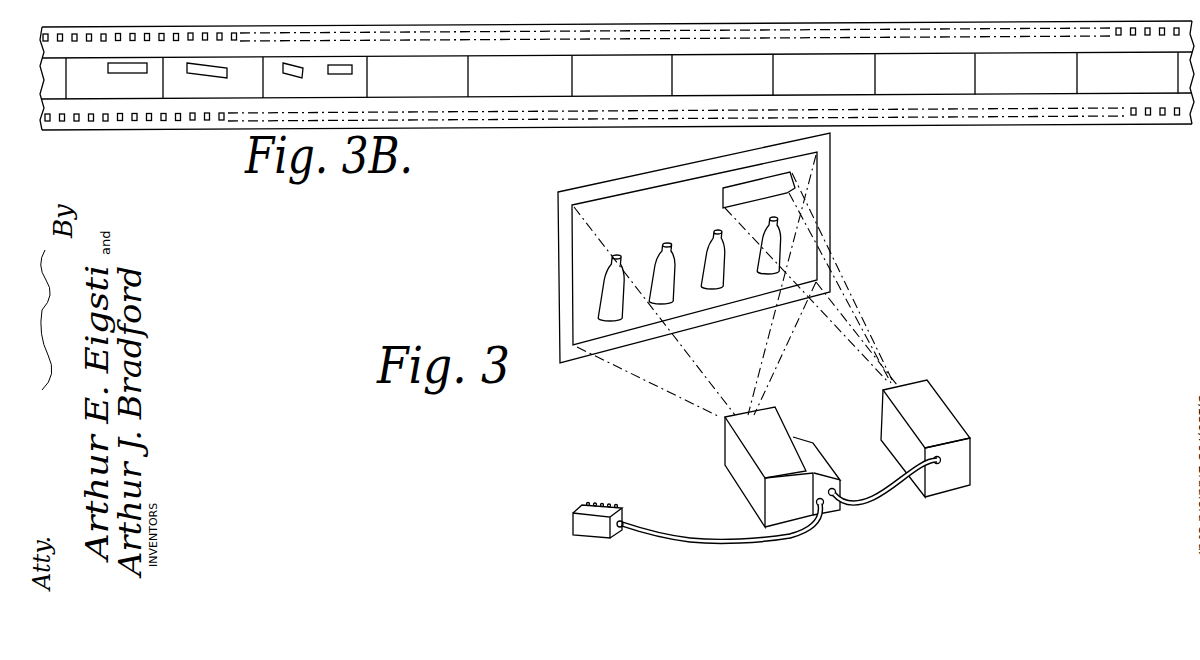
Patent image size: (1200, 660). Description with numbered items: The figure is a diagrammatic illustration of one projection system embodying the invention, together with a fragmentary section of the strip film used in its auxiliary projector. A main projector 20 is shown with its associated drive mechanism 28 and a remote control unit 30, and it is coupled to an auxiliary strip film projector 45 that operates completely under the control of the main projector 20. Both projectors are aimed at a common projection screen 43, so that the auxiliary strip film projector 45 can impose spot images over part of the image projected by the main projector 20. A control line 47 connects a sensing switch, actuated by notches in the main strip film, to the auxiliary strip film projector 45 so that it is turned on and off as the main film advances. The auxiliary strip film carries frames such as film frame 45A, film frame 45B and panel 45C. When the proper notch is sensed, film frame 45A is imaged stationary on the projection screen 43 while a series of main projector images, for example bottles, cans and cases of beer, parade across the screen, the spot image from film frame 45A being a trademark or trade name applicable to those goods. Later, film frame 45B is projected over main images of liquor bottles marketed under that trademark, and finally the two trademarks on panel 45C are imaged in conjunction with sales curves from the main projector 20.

In FIG. 3, the main projector 20 is at (725, 456).
In FIG. 3, the drive mechanism 28 is at (821, 447).
In FIG. 3, the remote control unit 30 is at (573, 530).
In FIG. 3, the projection screen 43 is at (829, 218).
In FIG. 3, the auxiliary strip film projector 45 is at (950, 416).
In FIG. 3B, the film frame 45A is at (100, 65).
In FIG. 3B, the film frame 45B is at (238, 63).
In FIG. 3B, the panel 45C is at (300, 64).
In FIG. 3, the control line 47 is at (890, 500).